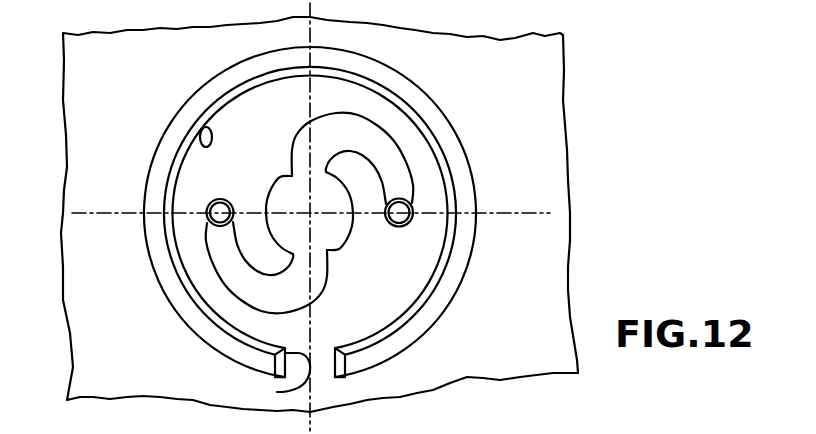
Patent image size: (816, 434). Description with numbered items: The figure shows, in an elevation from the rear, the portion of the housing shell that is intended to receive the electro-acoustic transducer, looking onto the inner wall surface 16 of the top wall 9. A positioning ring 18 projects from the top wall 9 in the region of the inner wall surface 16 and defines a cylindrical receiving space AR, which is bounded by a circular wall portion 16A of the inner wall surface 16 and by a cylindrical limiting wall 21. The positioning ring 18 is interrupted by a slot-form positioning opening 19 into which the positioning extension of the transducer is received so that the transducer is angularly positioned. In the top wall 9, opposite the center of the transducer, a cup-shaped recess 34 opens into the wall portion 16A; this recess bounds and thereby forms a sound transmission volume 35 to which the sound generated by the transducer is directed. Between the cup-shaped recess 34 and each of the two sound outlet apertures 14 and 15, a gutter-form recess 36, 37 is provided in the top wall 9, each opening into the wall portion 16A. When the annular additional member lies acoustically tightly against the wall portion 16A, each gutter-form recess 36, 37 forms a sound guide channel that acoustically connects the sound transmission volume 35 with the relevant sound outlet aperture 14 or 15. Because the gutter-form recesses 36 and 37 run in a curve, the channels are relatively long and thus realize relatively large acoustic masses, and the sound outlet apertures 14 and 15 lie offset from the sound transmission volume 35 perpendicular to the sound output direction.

The top wall 9 is at (572, 157).
The sound outlet aperture 14 is at (400, 210).
The sound outlet aperture 15 is at (210, 216).
The inner wall surface 16 is at (537, 72).
The circular wall portion 16A is at (258, 117).
The positioning ring 18 is at (419, 315).
The positioning opening 19 is at (279, 382).
The cylindrical limiting wall 21 is at (201, 146).
The cup-shaped recess 34 is at (338, 240).
The sound transmission volume 35 is at (289, 198).
The gutter-form recess 36 is at (390, 153).
The gutter-form recess 37 is at (218, 266).
The receiving space AR is at (325, 93).